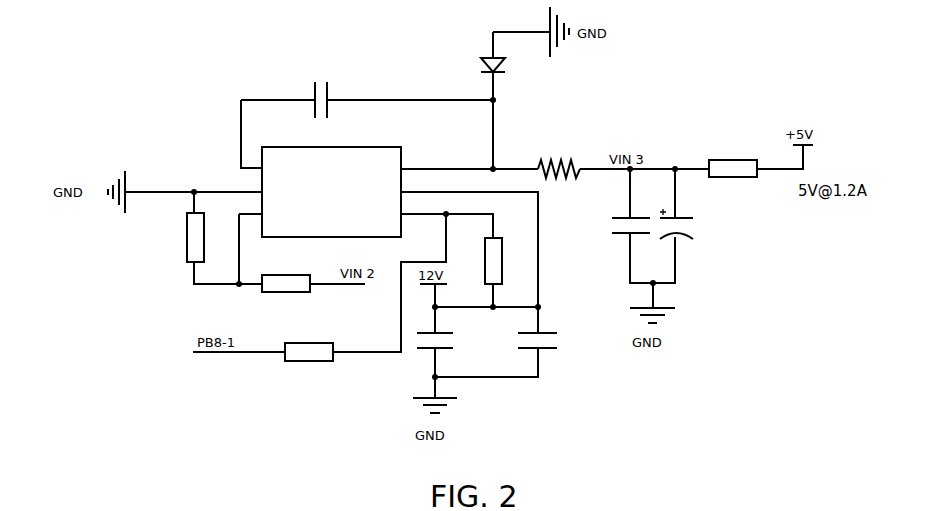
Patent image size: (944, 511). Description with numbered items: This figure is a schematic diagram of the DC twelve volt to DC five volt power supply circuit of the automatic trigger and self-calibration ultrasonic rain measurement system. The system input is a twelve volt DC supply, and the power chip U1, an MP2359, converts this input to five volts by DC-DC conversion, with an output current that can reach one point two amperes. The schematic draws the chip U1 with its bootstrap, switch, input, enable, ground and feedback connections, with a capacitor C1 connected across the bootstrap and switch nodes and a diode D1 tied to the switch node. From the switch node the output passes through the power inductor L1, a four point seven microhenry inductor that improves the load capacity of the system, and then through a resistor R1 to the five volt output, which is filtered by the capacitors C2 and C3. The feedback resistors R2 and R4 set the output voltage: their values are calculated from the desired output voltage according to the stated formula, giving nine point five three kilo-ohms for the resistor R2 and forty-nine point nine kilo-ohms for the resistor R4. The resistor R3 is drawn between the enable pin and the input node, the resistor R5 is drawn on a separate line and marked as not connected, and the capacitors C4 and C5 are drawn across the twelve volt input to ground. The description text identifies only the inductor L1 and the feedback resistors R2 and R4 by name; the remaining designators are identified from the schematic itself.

The MP2359 step-down regulator IC U1 is at (330, 191).
The bootstrap capacitor 0.01uF C1 is at (303, 78).
The Schottky diode SS14 D1 is at (510, 78).
The power inductor L1 is at (551, 152).
The resistor 0 ohm R1 is at (733, 169).
The feedback resistor R2 is at (173, 257).
The enable resistor 100K R3 is at (492, 261).
The feedback resistor R4 is at (283, 286).
The resistor NC R5 is at (309, 370).
The output capacitor 0.1uF C2 is at (619, 255).
The output electrolytic capacitor 220uF C3 is at (687, 250).
The input capacitor 10uF C4 is at (432, 348).
The input capacitor 0.1uF C5 is at (538, 354).